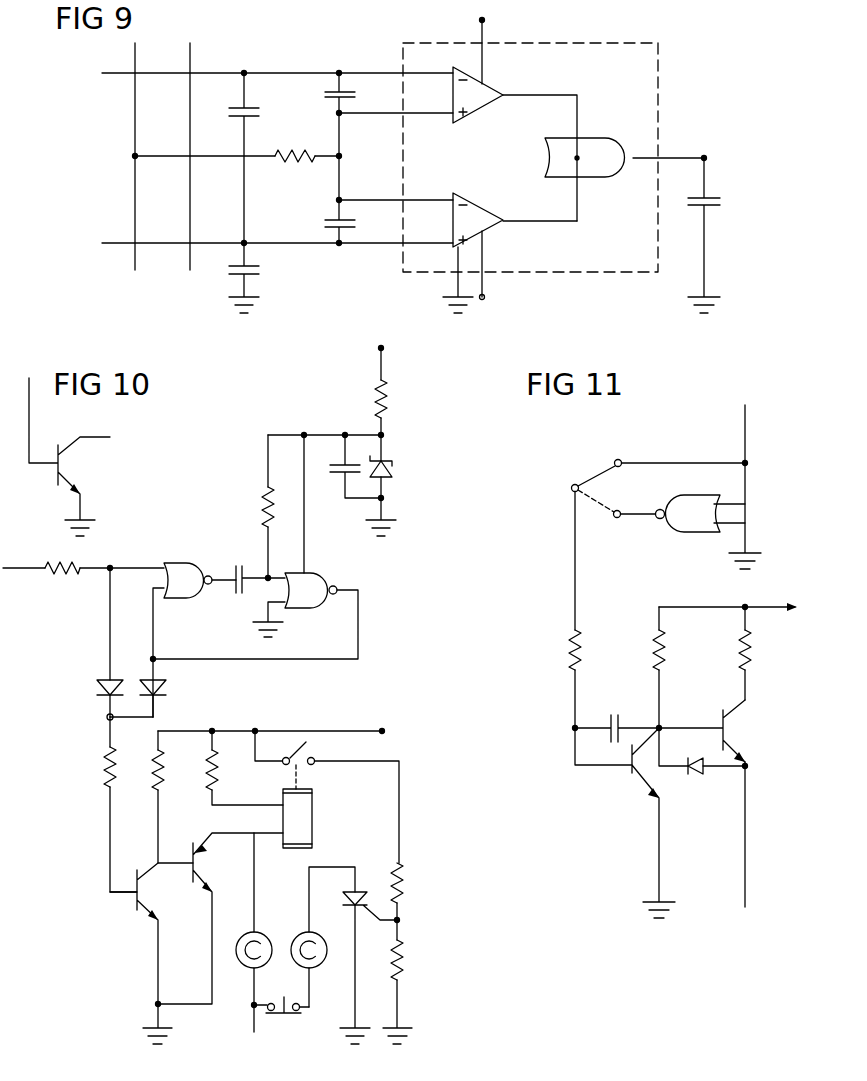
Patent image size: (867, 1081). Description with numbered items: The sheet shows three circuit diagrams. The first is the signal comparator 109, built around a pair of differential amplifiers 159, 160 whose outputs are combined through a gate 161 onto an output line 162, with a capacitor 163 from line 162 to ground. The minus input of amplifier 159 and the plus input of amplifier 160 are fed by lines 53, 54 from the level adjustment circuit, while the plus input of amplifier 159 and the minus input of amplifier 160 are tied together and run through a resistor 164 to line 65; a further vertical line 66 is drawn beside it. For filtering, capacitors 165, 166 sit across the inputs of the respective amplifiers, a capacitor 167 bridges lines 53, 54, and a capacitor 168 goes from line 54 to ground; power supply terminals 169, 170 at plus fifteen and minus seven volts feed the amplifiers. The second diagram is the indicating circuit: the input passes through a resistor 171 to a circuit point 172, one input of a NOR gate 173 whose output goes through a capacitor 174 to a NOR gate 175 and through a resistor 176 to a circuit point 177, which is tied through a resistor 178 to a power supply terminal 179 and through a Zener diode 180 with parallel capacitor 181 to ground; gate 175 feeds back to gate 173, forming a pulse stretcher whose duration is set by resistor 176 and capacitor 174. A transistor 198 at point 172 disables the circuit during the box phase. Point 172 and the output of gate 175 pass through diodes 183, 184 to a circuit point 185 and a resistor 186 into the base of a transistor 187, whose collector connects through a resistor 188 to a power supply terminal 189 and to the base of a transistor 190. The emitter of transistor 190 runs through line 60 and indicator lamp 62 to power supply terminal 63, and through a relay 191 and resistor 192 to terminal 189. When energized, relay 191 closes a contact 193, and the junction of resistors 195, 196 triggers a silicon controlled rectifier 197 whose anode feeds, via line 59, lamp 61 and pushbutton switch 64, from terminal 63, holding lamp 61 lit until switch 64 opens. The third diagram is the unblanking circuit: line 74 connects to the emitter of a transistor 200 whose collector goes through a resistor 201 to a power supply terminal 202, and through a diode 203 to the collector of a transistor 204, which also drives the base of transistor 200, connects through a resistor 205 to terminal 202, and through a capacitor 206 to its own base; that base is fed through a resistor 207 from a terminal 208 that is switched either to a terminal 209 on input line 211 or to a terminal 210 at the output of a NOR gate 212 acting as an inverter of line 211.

In FIG. 9, the signal comparator 109 is at (698, 66).
In FIG. 9, the line 53 is at (123, 76).
In FIG. 9, the line 54 is at (123, 246).
In FIG. 9, the line 65 is at (135, 256).
In FIG. 9, the line 66 is at (190, 256).
In FIG. 9, the differential amplifier 159 is at (490, 84).
In FIG. 9, the differential amplifier 160 is at (490, 230).
In FIG. 9, the gate 161 is at (601, 178).
In FIG. 9, the output line 162 is at (706, 158).
In FIG. 9, the capacitor 163 is at (721, 202).
In FIG. 9, the resistor 164 is at (237, 169).
In FIG. 9, the capacitor 165 is at (325, 94).
In FIG. 9, the capacitor 166 is at (325, 223).
In FIG. 9, the capacitor 167 is at (260, 113).
In FIG. 9, the capacitor 168 is at (260, 273).
In FIG. 9, the power supply terminal 169 is at (485, 21).
In FIG. 9, the power supply terminal 170 is at (485, 296).
In FIG. 10, the transistor 198 is at (56, 469).
In FIG. 10, the resistor 171 is at (52, 564).
In FIG. 10, the circuit point 172 is at (108, 571).
In FIG. 10, the NOR gate 173 is at (177, 564).
In FIG. 10, the capacitor 174 is at (237, 565).
In FIG. 10, the NOR gate 175 is at (321, 581).
In FIG. 10, the resistor 176 is at (262, 505).
In FIG. 10, the circuit point 177 is at (312, 421).
In FIG. 10, the resistor 178 is at (388, 403).
In FIG. 10, the power supply terminal 179 is at (384, 347).
In FIG. 10, the Zener diode 180 is at (393, 473).
In FIG. 10, the capacitor 181 is at (341, 484).
In FIG. 10, the diode 183 is at (97, 690).
In FIG. 10, the diode 184 is at (166, 690).
In FIG. 10, the circuit point 185 is at (107, 718).
In FIG. 10, the resistor 186 is at (104, 767).
In FIG. 10, the transistor 187 is at (142, 889).
In FIG. 10, the resistor 188 is at (163, 790).
In FIG. 10, the power supply terminal 189 is at (384, 731).
In FIG. 10, the transistor 190 is at (196, 866).
In FIG. 10, the relay 191 is at (313, 818).
In FIG. 10, the resistor 192 is at (217, 785).
In FIG. 10, the contact 193 is at (308, 743).
In FIG. 10, the resistor 195 is at (404, 882).
In FIG. 10, the resistor 196 is at (404, 960).
In FIG. 10, the silicon controlled rectifier 197 is at (361, 888).
In FIG. 10, the line 59 is at (308, 880).
In FIG. 10, the line 60 is at (257, 903).
In FIG. 10, the lamp 61 is at (319, 955).
In FIG. 10, the indicator lamp 62 is at (247, 942).
In FIG. 10, the power supply terminal 63 is at (253, 1030).
In FIG. 10, the pushbutton switch 64 is at (288, 1018).
In FIG. 11, the input line 211 is at (745, 428).
In FIG. 11, the NOR gate 212 is at (690, 530).
In FIG. 11, the terminal 209 is at (661, 460).
In FIG. 11, the terminal 208 is at (570, 488).
In FIG. 11, the terminal 210 is at (616, 518).
In FIG. 11, the power supply terminal 202 is at (731, 594).
In FIG. 11, the resistor 207 is at (568, 652).
In FIG. 11, the resistor 205 is at (653, 652).
In FIG. 11, the resistor 201 is at (740, 652).
In FIG. 11, the capacitor 206 is at (618, 706).
In FIG. 11, the transistor 204 is at (628, 776).
In FIG. 11, the diode 203 is at (698, 778).
In FIG. 11, the transistor 200 is at (727, 735).
In FIG. 11, the line 74 is at (745, 860).